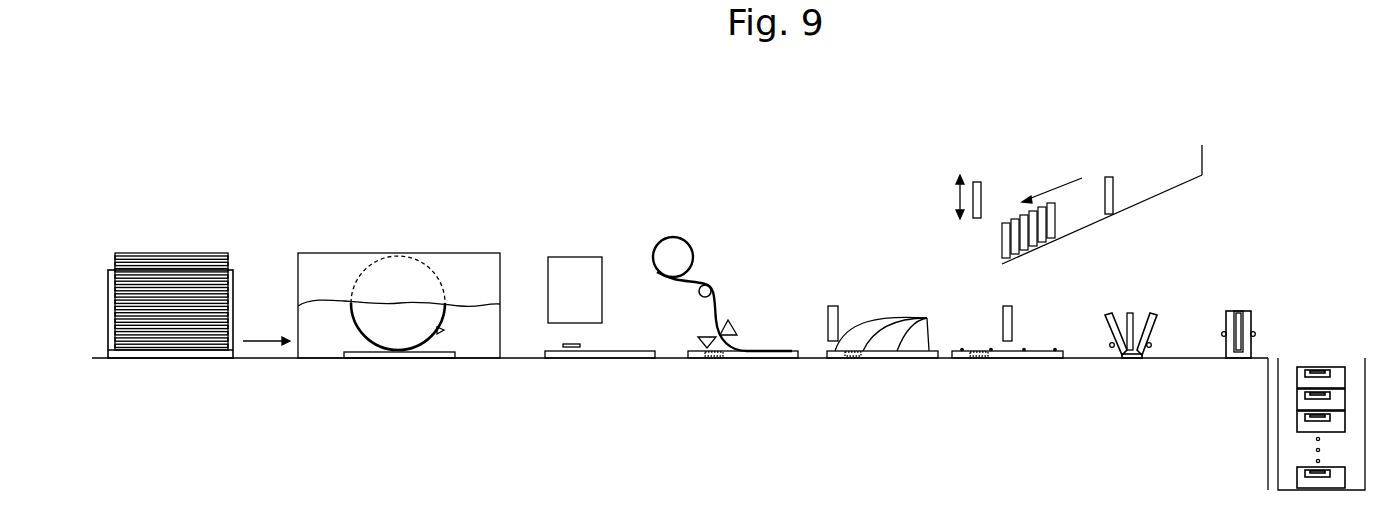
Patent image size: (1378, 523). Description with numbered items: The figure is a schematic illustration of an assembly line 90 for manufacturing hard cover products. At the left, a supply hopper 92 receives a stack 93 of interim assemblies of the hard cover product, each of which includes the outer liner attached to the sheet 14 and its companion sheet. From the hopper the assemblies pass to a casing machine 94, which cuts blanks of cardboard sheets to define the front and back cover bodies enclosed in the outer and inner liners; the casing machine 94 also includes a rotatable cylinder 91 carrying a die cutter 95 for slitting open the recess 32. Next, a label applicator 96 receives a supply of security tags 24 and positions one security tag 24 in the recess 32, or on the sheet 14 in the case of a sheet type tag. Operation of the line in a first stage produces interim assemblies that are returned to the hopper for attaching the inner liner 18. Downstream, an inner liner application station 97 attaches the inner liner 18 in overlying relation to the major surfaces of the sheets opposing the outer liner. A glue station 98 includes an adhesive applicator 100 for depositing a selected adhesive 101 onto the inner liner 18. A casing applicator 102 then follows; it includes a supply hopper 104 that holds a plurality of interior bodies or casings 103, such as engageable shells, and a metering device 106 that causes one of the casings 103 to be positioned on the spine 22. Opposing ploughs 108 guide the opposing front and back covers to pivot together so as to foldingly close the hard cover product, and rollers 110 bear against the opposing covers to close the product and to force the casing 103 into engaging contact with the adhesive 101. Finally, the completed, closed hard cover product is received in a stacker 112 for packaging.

The assembly line 90 is at (597, 188).
The rotatable cylinder 91 is at (398, 326).
The supply hopper 92 is at (168, 356).
The stack 93 is at (158, 288).
The casing machine 94 is at (443, 262).
The die cutter 95 is at (440, 335).
The label applicator 96 is at (578, 266).
The security tag 24 is at (578, 344).
The recess 32 is at (571, 358).
The inner liner application station 97 is at (717, 296).
The inner liner 18 is at (747, 347).
The glue station 98 is at (871, 290).
The adhesive applicator 100 is at (833, 307).
The adhesive 101 is at (1163, 303).
The casing applicator 102 is at (966, 246).
The casing 103 is at (1008, 322).
The supply hopper 104 is at (1152, 192).
The metering device 106 is at (982, 186).
The opposing ploughs 108 is at (1150, 348).
The rollers 110 is at (1224, 337).
The sheet 14 is at (1232, 315).
The spine 22 is at (1238, 356).
The stacker 112 is at (1280, 428).